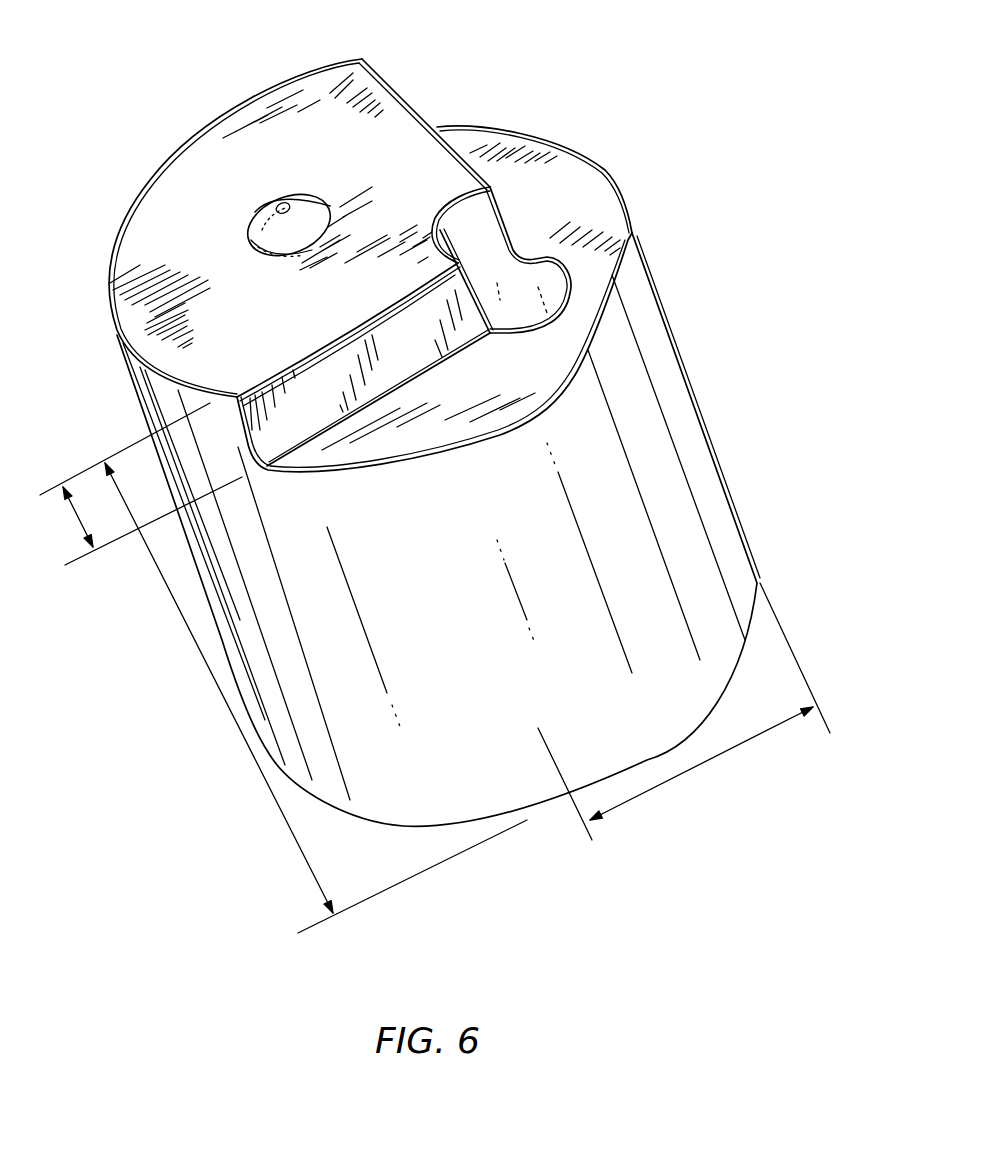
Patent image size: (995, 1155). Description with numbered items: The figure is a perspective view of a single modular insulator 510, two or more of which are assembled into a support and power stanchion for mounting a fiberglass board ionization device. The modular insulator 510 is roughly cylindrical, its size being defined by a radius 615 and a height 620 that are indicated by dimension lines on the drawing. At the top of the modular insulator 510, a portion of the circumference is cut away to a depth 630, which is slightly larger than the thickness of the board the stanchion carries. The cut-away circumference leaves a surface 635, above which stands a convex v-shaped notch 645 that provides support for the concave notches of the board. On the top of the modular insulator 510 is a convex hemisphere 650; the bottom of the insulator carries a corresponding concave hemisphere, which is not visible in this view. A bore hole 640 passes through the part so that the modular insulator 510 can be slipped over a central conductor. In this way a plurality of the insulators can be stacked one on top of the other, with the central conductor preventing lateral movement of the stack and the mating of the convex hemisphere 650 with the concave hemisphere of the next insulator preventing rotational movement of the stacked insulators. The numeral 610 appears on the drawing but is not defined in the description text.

The modular insulator 510 is at (478, 424).
The cylindrical body 610 is at (698, 403).
The radius 615 is at (752, 740).
The height 620 is at (228, 711).
The depth 630 is at (82, 522).
The surface 635 is at (520, 143).
The bore hole 640 is at (523, 273).
The convex v-shaped notch 645 is at (410, 92).
The convex hemisphere 650 is at (282, 197).